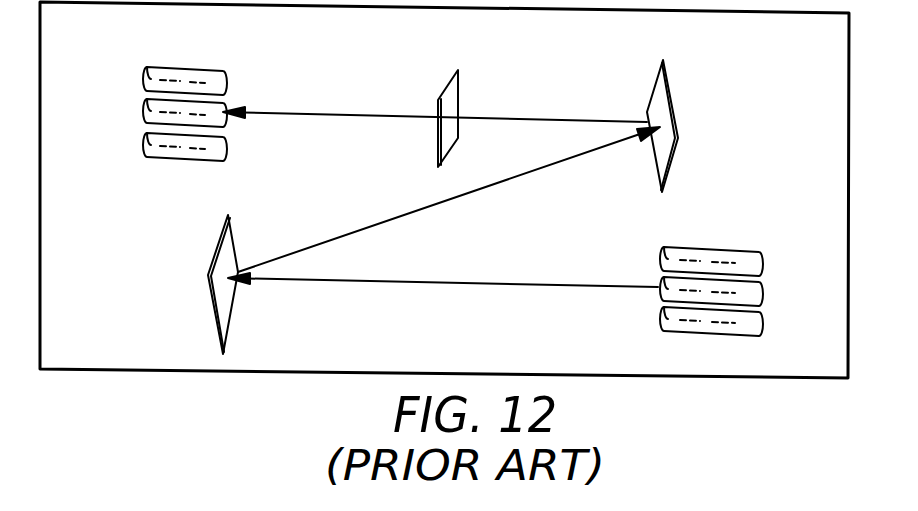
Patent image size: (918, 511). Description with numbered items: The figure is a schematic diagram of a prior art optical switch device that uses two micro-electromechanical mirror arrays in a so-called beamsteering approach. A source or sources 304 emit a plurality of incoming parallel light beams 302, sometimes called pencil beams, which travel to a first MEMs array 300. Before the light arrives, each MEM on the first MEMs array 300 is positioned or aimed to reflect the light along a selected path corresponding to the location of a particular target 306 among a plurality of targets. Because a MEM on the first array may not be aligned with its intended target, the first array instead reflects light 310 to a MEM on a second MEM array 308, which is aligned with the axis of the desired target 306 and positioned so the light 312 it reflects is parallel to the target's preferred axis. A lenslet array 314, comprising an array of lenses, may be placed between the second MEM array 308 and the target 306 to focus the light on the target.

The first MEMs array 300 is at (210, 302).
The incoming parallel light beams 302 is at (420, 285).
The sources 304 is at (658, 295).
The target 306 is at (228, 105).
The second MEM array 308 is at (673, 107).
The reflected light 310 is at (437, 208).
The light beam to detectors 312 is at (381, 117).
The lenslet array 314 is at (458, 98).